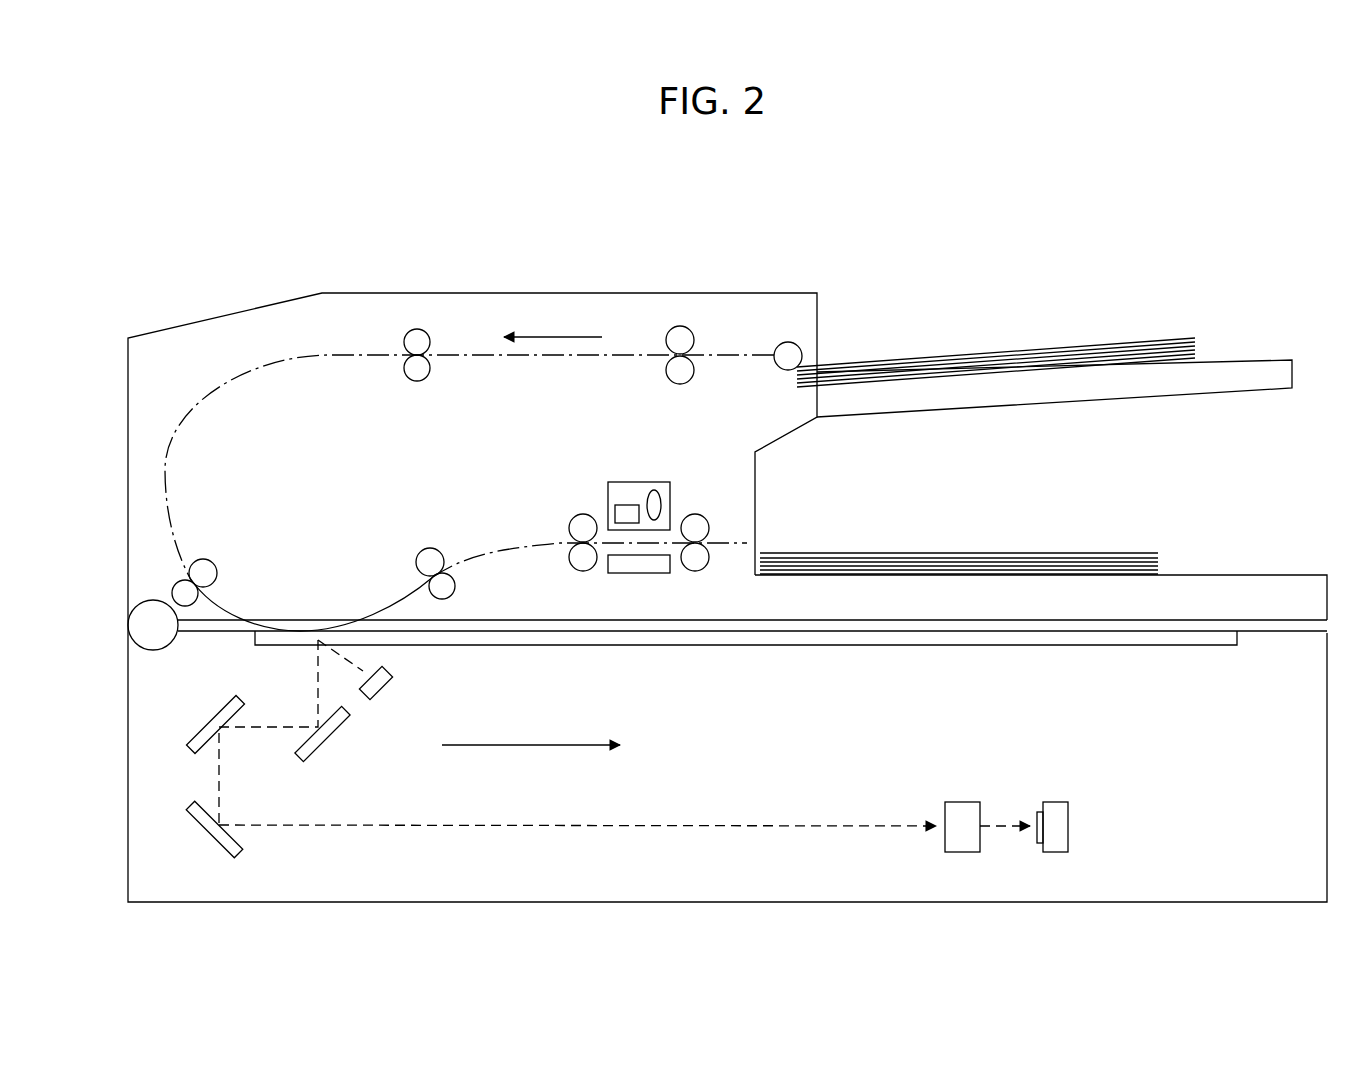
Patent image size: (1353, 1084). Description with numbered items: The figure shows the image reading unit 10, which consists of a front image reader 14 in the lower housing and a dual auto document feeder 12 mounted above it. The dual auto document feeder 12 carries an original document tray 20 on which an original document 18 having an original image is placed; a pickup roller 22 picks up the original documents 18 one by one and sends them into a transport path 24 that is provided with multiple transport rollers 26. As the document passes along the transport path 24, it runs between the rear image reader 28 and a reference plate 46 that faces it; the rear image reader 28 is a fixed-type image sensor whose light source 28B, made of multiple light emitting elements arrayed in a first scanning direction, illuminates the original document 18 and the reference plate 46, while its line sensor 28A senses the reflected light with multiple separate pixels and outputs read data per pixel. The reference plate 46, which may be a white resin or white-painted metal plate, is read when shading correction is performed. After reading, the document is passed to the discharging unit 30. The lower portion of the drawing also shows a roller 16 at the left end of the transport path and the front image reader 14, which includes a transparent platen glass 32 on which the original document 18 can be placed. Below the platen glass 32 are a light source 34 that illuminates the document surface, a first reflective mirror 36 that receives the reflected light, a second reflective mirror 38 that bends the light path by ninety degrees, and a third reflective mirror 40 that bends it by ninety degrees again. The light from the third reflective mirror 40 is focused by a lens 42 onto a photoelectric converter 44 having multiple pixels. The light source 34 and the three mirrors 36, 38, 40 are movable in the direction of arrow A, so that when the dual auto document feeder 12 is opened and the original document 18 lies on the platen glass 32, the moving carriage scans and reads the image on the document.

The image reading unit 10 is at (1224, 222).
The dual auto document feeder 12 is at (128, 460).
The front image reader 14 is at (128, 780).
The roller 16 is at (132, 623).
The original document 18 is at (1073, 347).
The original document tray 20 is at (1250, 360).
The pickup roller 22 is at (803, 341).
The transport path 24 is at (476, 321).
The transport rollers 26 is at (224, 557).
The rear image reader 28 is at (630, 481).
The line sensor 28A is at (617, 504).
The light source 28B is at (657, 490).
The discharging unit 30 is at (1248, 575).
The platen glass 32 is at (1227, 646).
The light source 34 is at (390, 685).
The first reflective mirror 36 is at (320, 750).
The second reflective mirror 38 is at (200, 727).
The third reflective mirror 40 is at (198, 827).
The lens 42 is at (963, 801).
The photoelectric converter 44 is at (1057, 801).
The reference plate 46 is at (630, 573).